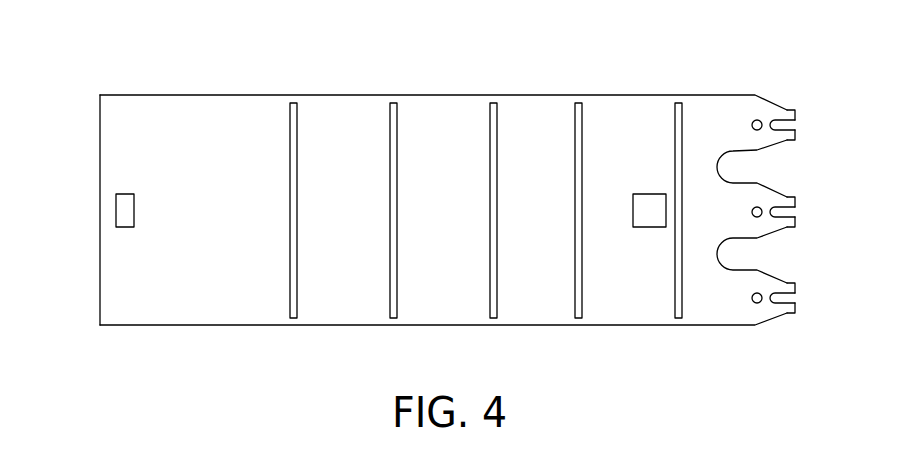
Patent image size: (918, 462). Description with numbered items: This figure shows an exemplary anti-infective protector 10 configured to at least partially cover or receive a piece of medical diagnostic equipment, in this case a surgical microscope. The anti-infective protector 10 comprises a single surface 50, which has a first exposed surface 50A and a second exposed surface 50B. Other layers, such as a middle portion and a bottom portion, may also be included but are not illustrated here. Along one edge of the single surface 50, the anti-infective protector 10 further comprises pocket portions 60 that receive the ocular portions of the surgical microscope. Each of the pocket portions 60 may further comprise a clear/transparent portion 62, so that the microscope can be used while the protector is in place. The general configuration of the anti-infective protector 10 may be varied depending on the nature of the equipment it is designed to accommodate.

The anti-infective protector 10 is at (440, 195).
The single surface 50 is at (92, 123).
The first exposed surface 50A is at (125, 170).
The second exposed surface 50B is at (100, 278).
The pocket portion 60 is at (809, 124).
The clear/transparent portion 62 is at (797, 284).